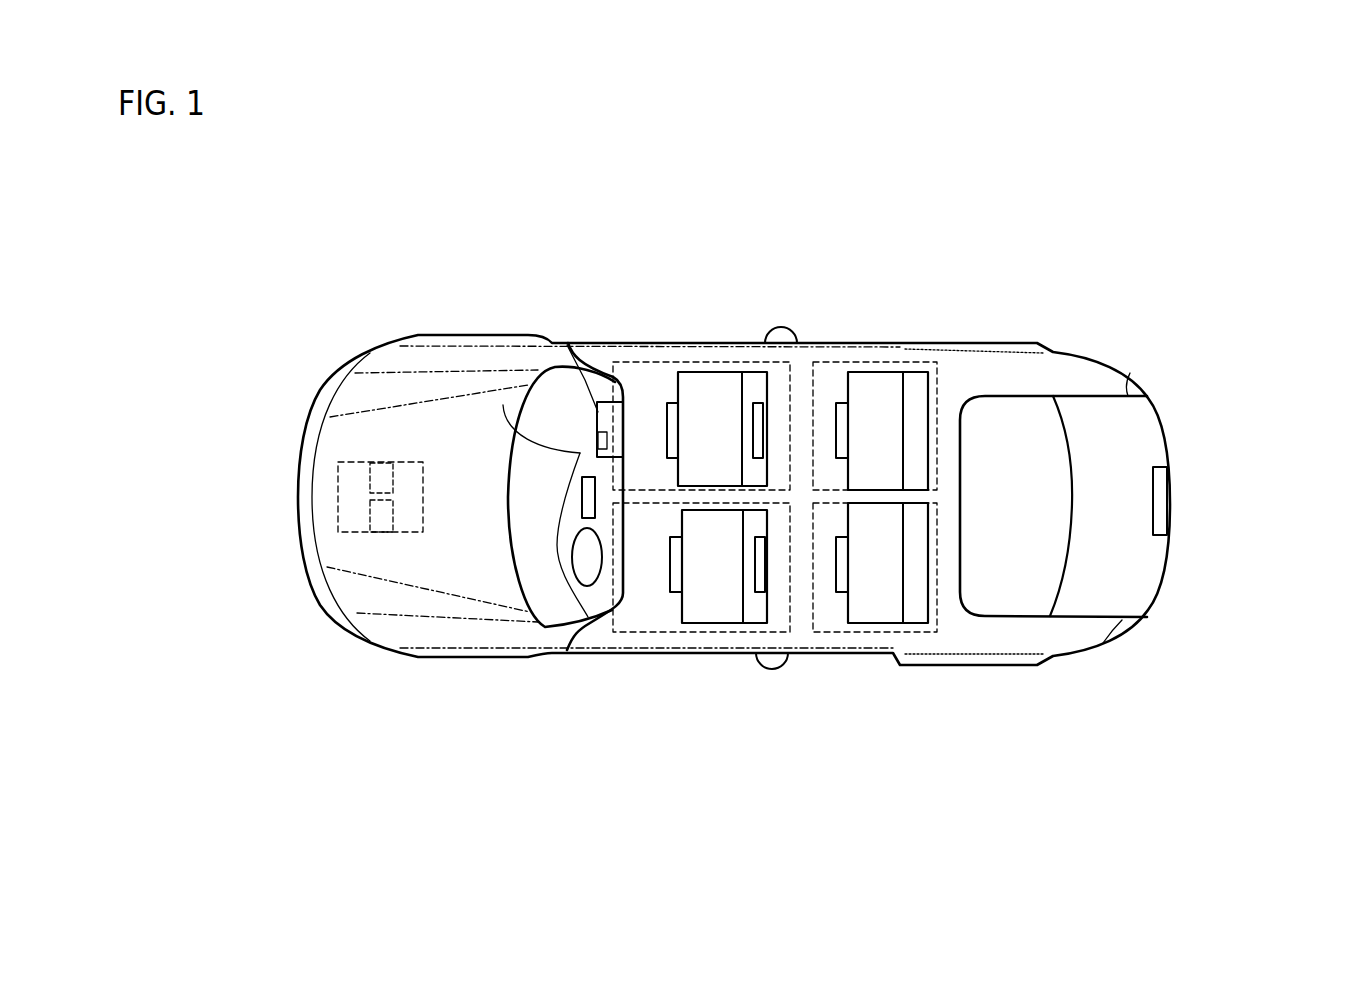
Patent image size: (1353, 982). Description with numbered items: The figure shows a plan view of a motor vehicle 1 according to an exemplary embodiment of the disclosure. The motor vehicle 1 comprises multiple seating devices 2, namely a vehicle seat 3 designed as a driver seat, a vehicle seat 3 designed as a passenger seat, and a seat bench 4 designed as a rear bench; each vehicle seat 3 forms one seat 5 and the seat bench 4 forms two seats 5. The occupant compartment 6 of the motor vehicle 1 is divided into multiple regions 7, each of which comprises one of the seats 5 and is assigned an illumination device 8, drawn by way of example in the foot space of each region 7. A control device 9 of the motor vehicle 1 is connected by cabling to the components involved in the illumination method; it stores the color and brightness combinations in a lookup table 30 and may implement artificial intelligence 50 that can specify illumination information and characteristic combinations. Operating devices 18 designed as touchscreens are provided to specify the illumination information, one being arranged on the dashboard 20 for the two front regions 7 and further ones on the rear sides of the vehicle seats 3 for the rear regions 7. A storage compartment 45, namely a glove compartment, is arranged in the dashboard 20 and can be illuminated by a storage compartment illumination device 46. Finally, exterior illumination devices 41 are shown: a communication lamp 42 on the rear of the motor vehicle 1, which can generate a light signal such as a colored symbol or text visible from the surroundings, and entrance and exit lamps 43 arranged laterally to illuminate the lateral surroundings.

The motor vehicle 1 is at (987, 310).
The seating device 2 is at (790, 494).
The vehicle seat 3 is at (705, 494).
The seat bench 4 is at (897, 372).
The seat 5 is at (790, 494).
The occupant compartment 6 is at (657, 409).
The region 7 is at (627, 362).
The illumination device 8 is at (665, 403).
The control device 9 is at (328, 478).
The operating device 18 is at (582, 491).
The dashboard 20 is at (503, 405).
The lookup table 30 is at (370, 482).
The exterior illumination device 41 is at (1008, 494).
The communication lamp 42 is at (1168, 497).
The entrance and exit lamp 43 is at (783, 326).
The storage compartment 45 is at (567, 345).
The storage compartment illumination device 46 is at (597, 433).
The artificial intelligence 50 is at (370, 518).